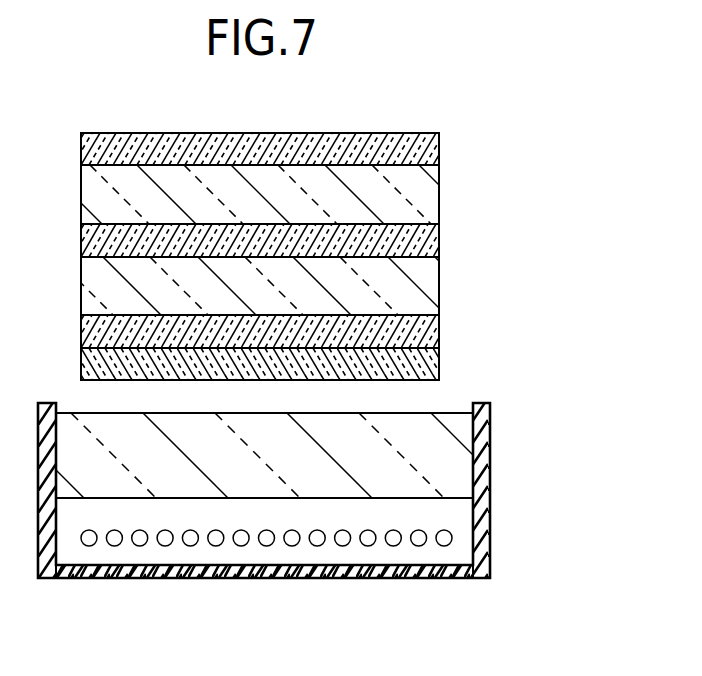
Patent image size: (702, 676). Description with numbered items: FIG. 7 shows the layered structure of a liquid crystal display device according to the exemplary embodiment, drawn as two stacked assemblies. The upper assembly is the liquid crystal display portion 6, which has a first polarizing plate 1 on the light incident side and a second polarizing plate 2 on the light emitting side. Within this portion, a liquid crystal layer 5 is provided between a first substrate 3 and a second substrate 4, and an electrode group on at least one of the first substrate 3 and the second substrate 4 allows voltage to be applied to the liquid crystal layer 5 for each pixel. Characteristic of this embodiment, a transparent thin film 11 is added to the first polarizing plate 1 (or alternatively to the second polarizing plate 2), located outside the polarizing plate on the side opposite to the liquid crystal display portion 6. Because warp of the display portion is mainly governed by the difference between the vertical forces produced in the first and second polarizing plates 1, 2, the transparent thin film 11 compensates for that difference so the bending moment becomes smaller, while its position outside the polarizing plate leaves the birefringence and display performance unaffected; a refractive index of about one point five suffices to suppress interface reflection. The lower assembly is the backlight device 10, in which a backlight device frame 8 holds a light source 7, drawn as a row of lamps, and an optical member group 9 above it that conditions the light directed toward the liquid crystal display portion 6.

The first polarizing plate 1 is at (440, 322).
The second polarizing plate 2 is at (440, 148).
The first substrate 3 is at (440, 286).
The second substrate 4 is at (440, 189).
The liquid crystal layer 5 is at (440, 238).
The liquid crystal display portion 6 is at (286, 258).
The light source 7 is at (313, 525).
The backlight device frame 8 is at (490, 566).
The optical member group 9 is at (455, 452).
The backlight device 10 is at (305, 491).
The transparent thin film 11 is at (305, 362).